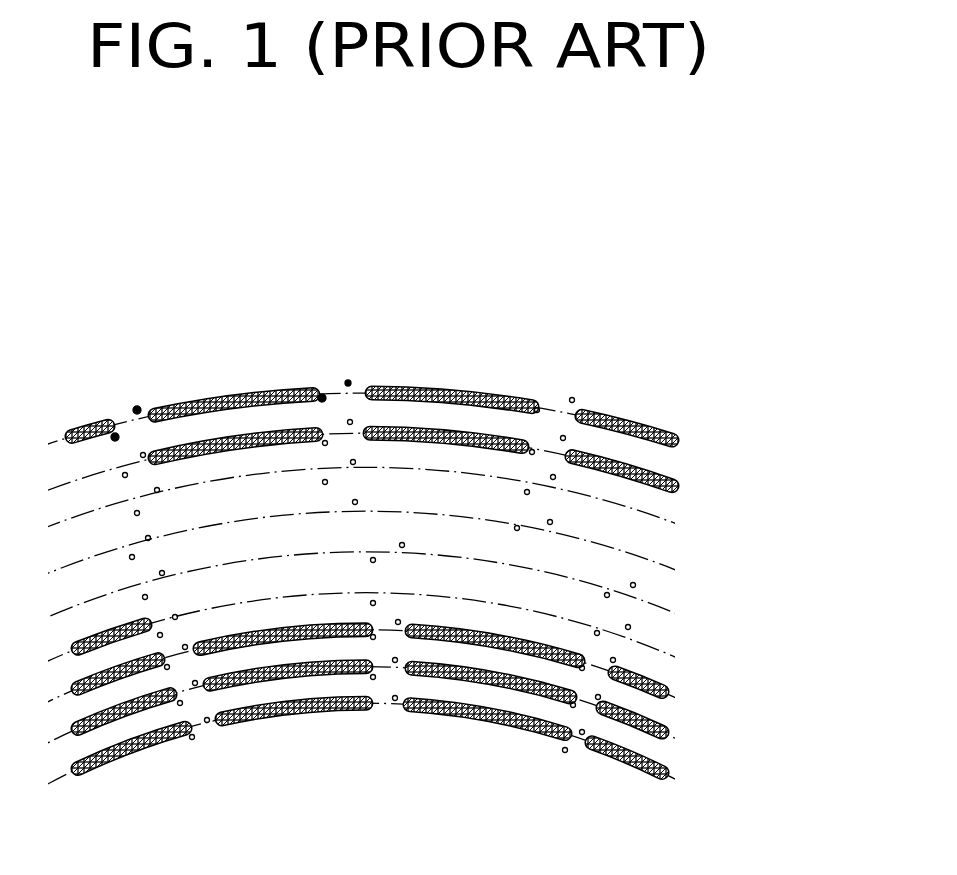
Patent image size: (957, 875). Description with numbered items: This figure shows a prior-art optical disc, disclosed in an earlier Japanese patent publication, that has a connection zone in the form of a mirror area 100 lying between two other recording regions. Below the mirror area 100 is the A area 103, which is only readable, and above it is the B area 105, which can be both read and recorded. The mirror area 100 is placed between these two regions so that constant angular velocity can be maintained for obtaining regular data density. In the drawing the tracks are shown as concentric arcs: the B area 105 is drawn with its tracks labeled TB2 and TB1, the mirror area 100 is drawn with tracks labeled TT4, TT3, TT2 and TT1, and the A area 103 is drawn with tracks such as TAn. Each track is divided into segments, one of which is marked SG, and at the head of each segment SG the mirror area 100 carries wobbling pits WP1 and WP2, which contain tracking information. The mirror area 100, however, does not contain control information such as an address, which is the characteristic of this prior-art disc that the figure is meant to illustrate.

The second burst track TB2 is at (478, 634).
The first burst track TB1 is at (728, 445).
The B area 105 is at (478, 634).
The fourth data track TT4 is at (478, 671).
The third data track TT3 is at (478, 693).
The second data track TT2 is at (478, 713).
The first data track TT1 is at (478, 734).
The mirror area 100 is at (478, 671).
The n-th servo track TAn is at (478, 752).
The A area 103 is at (478, 752).
The segment SG is at (365, 733).
The wobbling pit WP1 is at (112, 430).
The wobbling pit WP2 is at (136, 405).